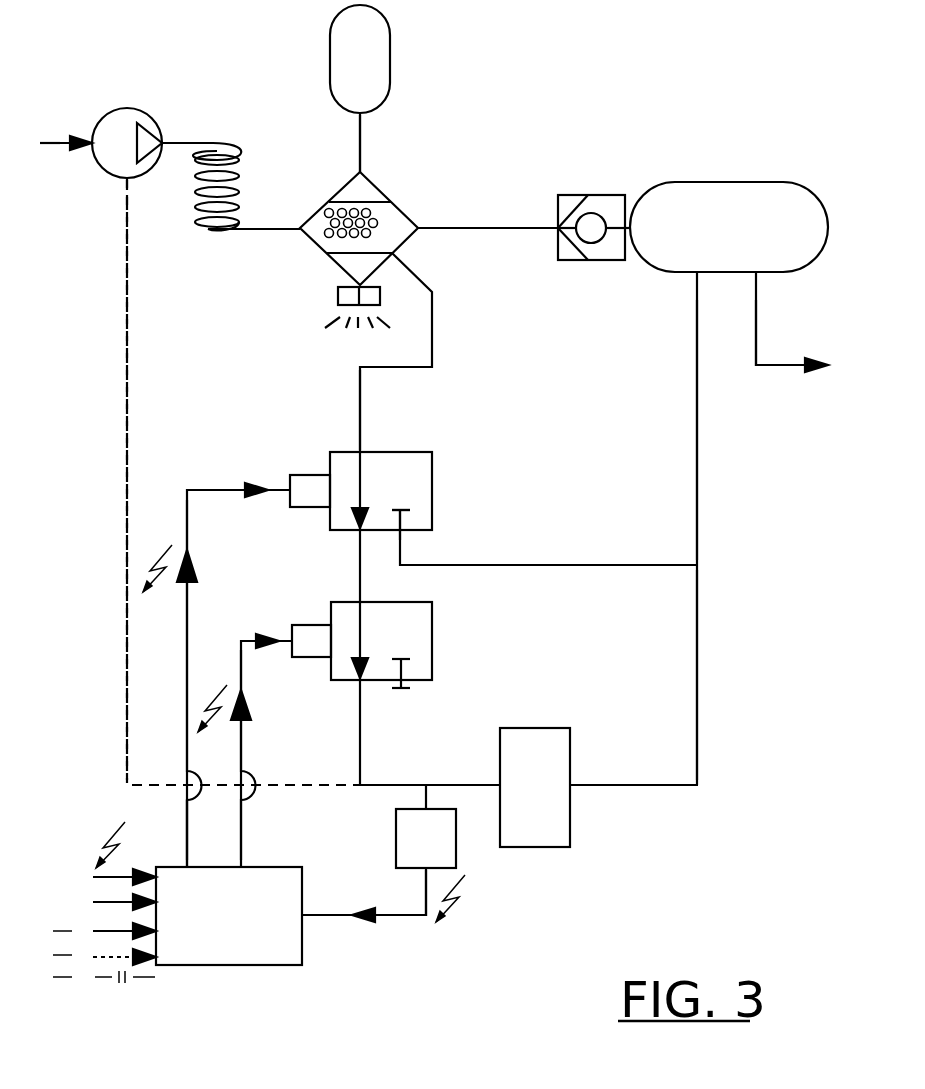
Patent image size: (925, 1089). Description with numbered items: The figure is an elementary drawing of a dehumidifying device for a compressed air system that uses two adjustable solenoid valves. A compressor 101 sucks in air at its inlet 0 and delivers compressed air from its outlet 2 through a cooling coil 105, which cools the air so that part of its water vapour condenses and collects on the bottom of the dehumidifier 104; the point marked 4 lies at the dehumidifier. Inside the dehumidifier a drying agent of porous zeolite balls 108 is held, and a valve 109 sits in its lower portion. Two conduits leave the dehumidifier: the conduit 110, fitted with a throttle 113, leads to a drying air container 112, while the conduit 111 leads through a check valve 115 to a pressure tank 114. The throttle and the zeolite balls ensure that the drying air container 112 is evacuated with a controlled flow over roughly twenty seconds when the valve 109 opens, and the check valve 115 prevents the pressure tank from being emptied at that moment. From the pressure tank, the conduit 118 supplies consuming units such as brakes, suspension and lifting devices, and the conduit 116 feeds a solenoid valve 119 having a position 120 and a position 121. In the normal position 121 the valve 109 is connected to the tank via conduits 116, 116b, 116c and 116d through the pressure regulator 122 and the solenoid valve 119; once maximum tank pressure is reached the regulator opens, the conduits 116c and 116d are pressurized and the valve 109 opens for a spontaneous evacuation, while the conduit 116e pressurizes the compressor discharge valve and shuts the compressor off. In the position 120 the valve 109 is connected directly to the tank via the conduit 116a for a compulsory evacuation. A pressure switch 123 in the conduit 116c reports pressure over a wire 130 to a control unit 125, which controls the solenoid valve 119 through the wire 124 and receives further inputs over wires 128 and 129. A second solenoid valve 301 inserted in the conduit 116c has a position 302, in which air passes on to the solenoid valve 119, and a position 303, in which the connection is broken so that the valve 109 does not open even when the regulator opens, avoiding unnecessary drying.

The inlet 0 is at (50, 129).
The outlet 2 is at (182, 129).
The state point 4 is at (281, 222).
The compressor 101 is at (108, 125).
The dehumidifier 104 is at (397, 222).
The cooling coil 105 is at (215, 147).
The porous zeolite balls 108 is at (330, 222).
The valve 109 is at (338, 295).
The conduit 110 is at (363, 130).
The conduit 111 is at (493, 230).
The drying air container 112 is at (377, 50).
The throttle 113 is at (363, 164).
The pressure tank 114 is at (747, 198).
The check valve 115 is at (573, 200).
The conduit 116 is at (698, 459).
The conduit 116a is at (602, 562).
The conduit 116b is at (700, 648).
The conduit 116c is at (395, 783).
The conduit 116d is at (358, 413).
The conduit 116e is at (126, 473).
The conduit 118 is at (777, 368).
The solenoid valve 119 is at (415, 472).
The position 120 is at (400, 518).
The position 121 is at (352, 517).
The pressure regulator 122 is at (547, 813).
The pressure switch 123 is at (403, 827).
The wire 124 is at (188, 615).
The control unit 125 is at (268, 950).
The wire 128 is at (95, 877).
The wire 129 is at (95, 902).
The wire 130 is at (395, 907).
The second adjustable solenoid valve 301 is at (415, 623).
The position 302 is at (277, 755).
The position 303 is at (400, 667).